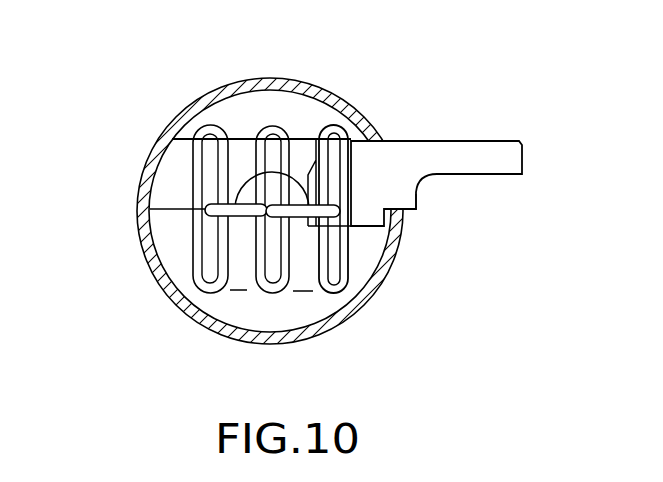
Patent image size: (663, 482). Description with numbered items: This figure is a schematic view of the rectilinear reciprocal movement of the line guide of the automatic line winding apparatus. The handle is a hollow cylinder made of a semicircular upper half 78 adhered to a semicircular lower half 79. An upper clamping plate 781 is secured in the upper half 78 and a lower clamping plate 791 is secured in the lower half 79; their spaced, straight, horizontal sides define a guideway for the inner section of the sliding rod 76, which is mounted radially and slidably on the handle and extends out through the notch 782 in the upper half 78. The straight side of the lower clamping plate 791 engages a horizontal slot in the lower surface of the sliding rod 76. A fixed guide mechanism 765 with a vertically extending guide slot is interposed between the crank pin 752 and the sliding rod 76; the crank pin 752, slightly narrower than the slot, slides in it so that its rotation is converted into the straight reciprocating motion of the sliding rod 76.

The sliding rod 76 is at (465, 158).
The upper half 78 is at (307, 88).
The lower half 79 is at (370, 290).
The crank pin 752 is at (305, 218).
The guide mechanism 765 is at (355, 139).
The upper clamping plate 781 is at (253, 108).
The notch 782 is at (405, 213).
The lower clamping plate 791 is at (178, 241).